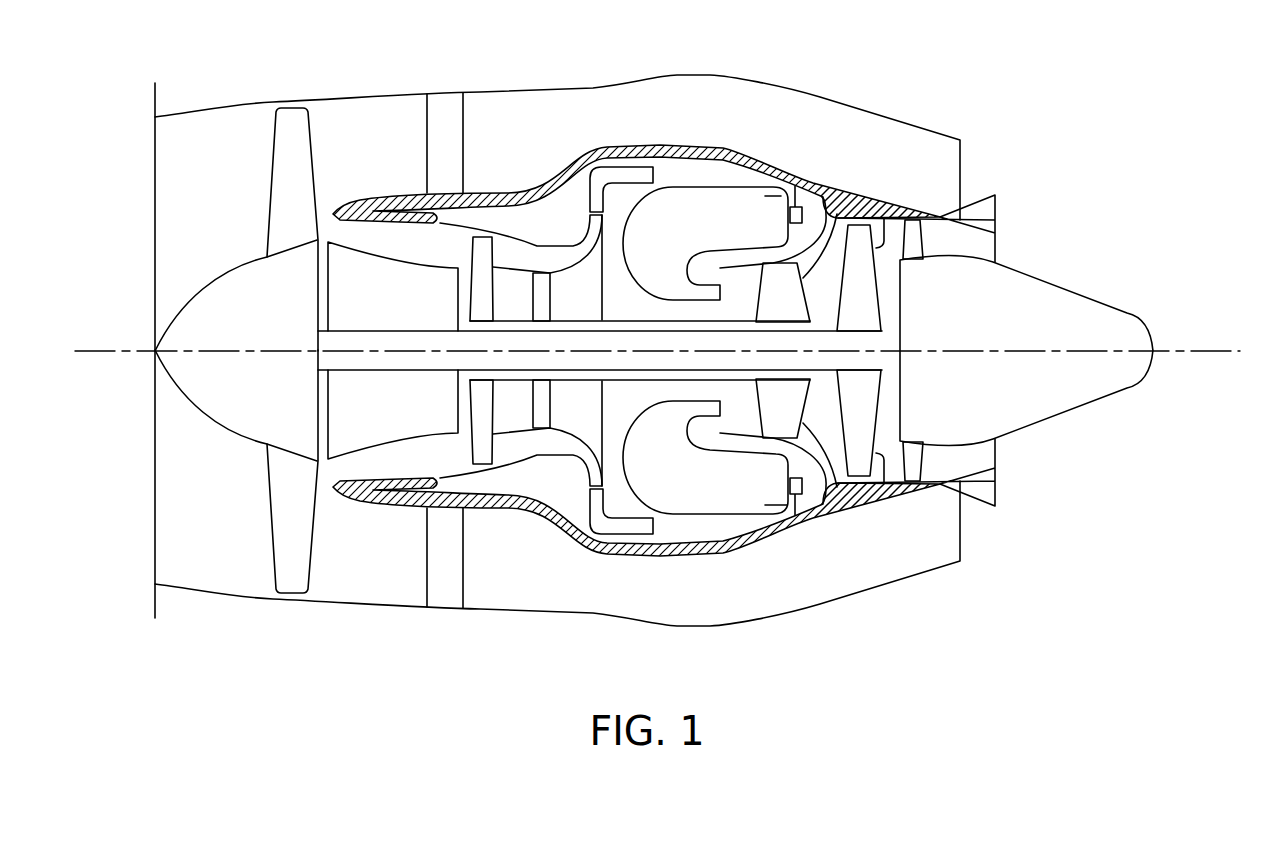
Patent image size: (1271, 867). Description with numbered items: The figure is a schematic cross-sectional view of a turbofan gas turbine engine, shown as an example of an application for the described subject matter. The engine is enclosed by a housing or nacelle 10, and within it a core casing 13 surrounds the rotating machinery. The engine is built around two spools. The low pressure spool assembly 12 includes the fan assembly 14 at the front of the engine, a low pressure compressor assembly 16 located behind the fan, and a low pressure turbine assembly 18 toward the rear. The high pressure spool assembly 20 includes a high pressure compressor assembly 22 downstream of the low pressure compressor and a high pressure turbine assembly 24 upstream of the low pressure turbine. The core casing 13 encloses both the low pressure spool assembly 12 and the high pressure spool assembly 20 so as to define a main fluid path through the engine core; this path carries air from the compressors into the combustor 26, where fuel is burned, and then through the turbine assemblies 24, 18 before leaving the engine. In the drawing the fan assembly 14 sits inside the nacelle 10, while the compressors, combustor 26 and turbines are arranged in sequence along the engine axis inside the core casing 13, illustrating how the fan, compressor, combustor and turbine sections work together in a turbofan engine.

The nacelle 10 is at (607, 84).
The low pressure spool assembly 12 is at (405, 330).
The core casing 13 is at (625, 146).
The fan assembly 14 is at (273, 160).
The low pressure compressor assembly 16 is at (347, 290).
The low pressure turbine assembly 18 is at (881, 193).
The high pressure spool assembly 20 is at (532, 320).
The high pressure compressor assembly 22 is at (512, 237).
The high pressure turbine assembly 24 is at (813, 175).
The combustor 26 is at (755, 203).